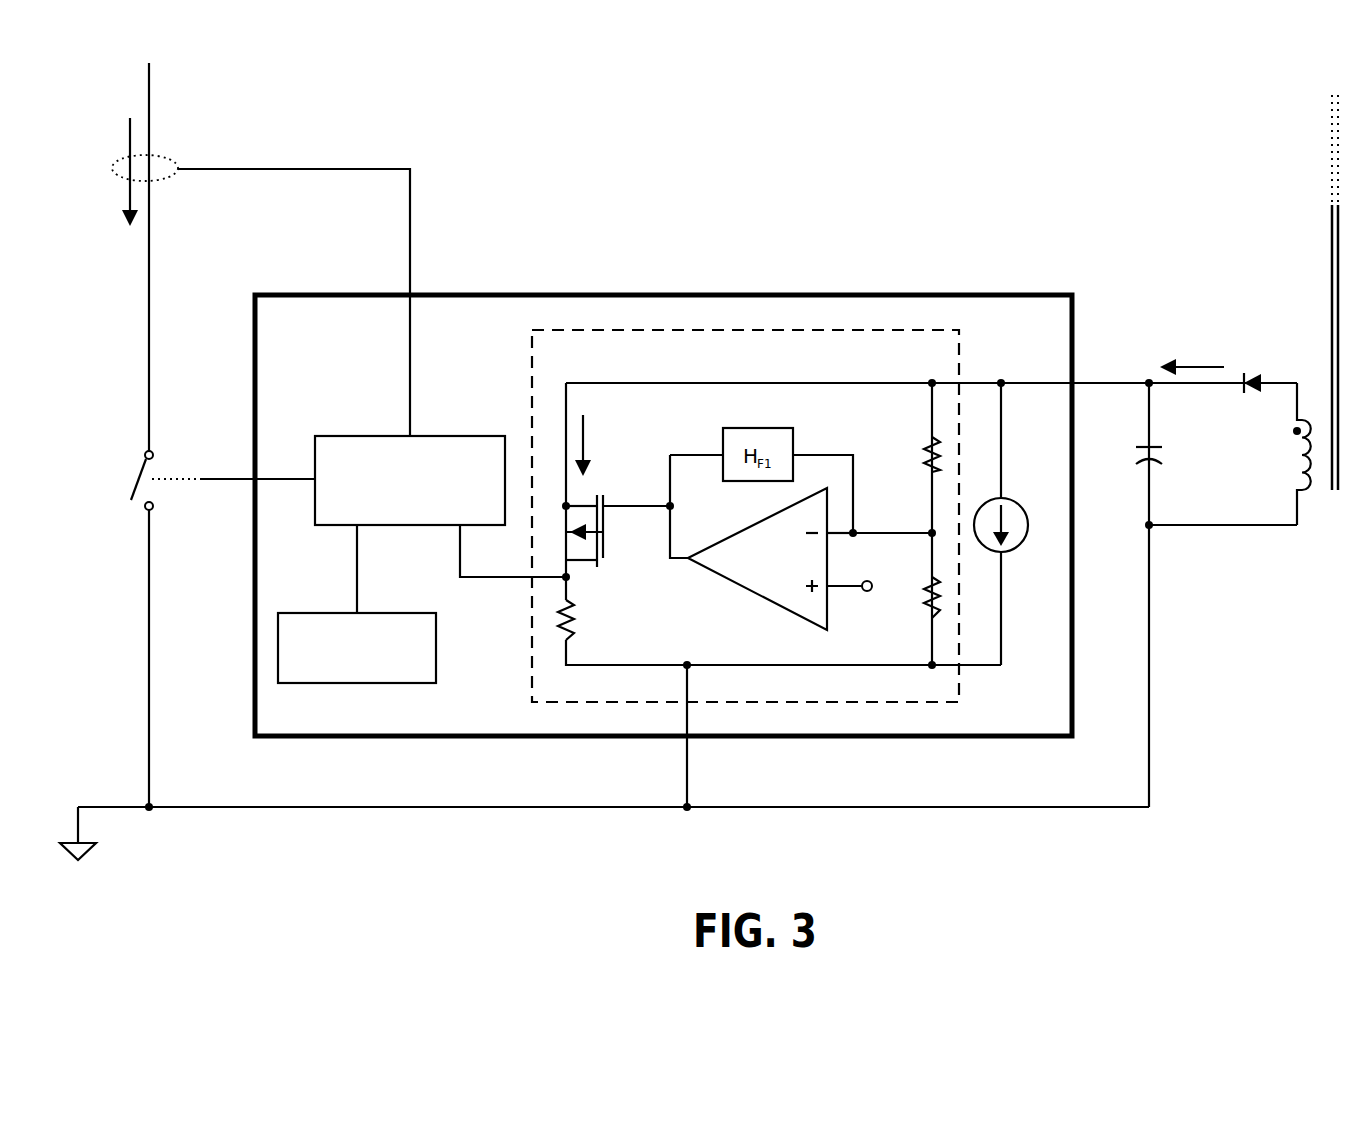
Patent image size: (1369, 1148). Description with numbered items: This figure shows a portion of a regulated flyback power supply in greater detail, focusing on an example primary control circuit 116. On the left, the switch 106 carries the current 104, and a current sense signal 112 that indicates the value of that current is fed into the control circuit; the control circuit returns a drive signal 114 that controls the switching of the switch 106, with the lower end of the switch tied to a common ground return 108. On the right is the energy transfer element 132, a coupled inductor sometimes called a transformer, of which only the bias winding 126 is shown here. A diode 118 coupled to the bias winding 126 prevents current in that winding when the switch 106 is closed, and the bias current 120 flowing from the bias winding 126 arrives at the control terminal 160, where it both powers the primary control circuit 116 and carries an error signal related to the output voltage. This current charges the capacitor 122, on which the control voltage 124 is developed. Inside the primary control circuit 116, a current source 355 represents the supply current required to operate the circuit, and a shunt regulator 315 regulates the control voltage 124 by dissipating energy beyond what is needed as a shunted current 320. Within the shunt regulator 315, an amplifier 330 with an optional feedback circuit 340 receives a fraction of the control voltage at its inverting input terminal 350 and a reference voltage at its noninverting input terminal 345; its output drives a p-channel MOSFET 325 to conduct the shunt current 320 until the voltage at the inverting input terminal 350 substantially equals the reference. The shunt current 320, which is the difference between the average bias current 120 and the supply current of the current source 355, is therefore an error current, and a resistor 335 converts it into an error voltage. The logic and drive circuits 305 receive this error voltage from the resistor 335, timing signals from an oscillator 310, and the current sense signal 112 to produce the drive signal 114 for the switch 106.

The current I_D 104 is at (115, 115).
The switch S1 106 is at (128, 472).
The ground 108 is at (100, 820).
The current sense signal 112 is at (252, 173).
The drive signal 114 is at (232, 487).
The primary control circuit 116 is at (813, 282).
The diode 118 is at (1261, 372).
The current I_B 120 is at (1206, 362).
The capacitor C2 122 is at (1140, 470).
The control voltage V_C 124 is at (1220, 448).
The bias winding 126 is at (1300, 473).
The energy transfer element L1 132 is at (1322, 244).
The control terminal 160 is at (1090, 378).
The logic and drive circuits 305 is at (340, 420).
The oscillator 310 is at (442, 653).
The shunt regulator 315 is at (520, 370).
The shunted current I_SH 320 is at (592, 427).
The p-channel MOSFET 325 is at (605, 497).
The amplifier 330 is at (770, 559).
The resistor 335 is at (583, 630).
The feedback circuit H_F1 340 is at (732, 487).
The noninverting input terminal 345 is at (865, 592).
The inverting input terminal 350 is at (857, 508).
The current source 355 is at (1008, 493).